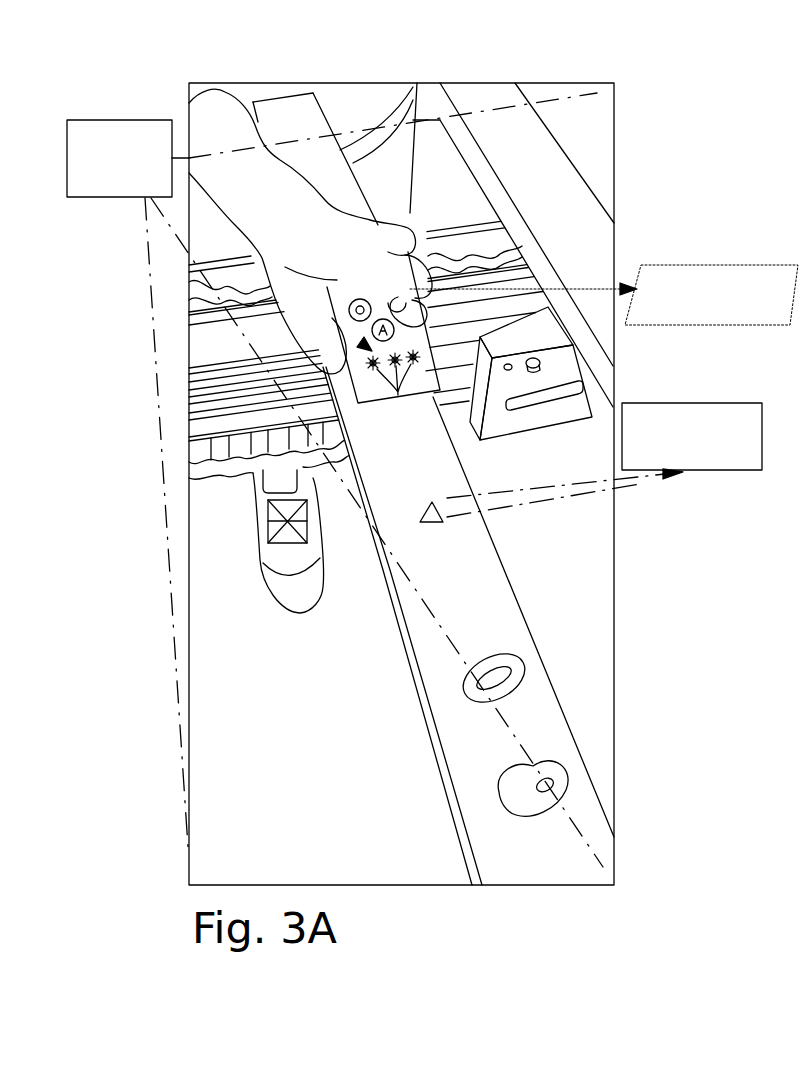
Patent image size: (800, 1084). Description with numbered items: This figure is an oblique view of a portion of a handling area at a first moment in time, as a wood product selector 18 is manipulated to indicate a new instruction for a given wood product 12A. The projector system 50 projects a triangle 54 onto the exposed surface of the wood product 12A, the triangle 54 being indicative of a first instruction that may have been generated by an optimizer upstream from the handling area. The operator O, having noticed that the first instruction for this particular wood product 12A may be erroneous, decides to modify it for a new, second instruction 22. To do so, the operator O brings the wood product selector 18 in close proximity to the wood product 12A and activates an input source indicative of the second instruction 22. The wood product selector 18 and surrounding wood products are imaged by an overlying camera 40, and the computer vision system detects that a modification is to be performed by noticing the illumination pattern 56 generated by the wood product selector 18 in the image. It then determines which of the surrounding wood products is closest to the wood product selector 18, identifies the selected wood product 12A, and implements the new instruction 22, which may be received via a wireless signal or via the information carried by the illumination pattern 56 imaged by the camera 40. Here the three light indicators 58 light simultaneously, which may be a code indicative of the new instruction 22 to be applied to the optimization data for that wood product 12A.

The operator O is at (377, 93).
The wood product selector 18 is at (370, 228).
The illumination pattern 56 is at (357, 343).
The light indicators 58 is at (398, 397).
The triangle 54 is at (428, 505).
The wood product 12A is at (550, 718).
The camera 40 is at (335, 480).
The instruction 22 is at (399, 162).
The projector system 50 is at (381, 258).